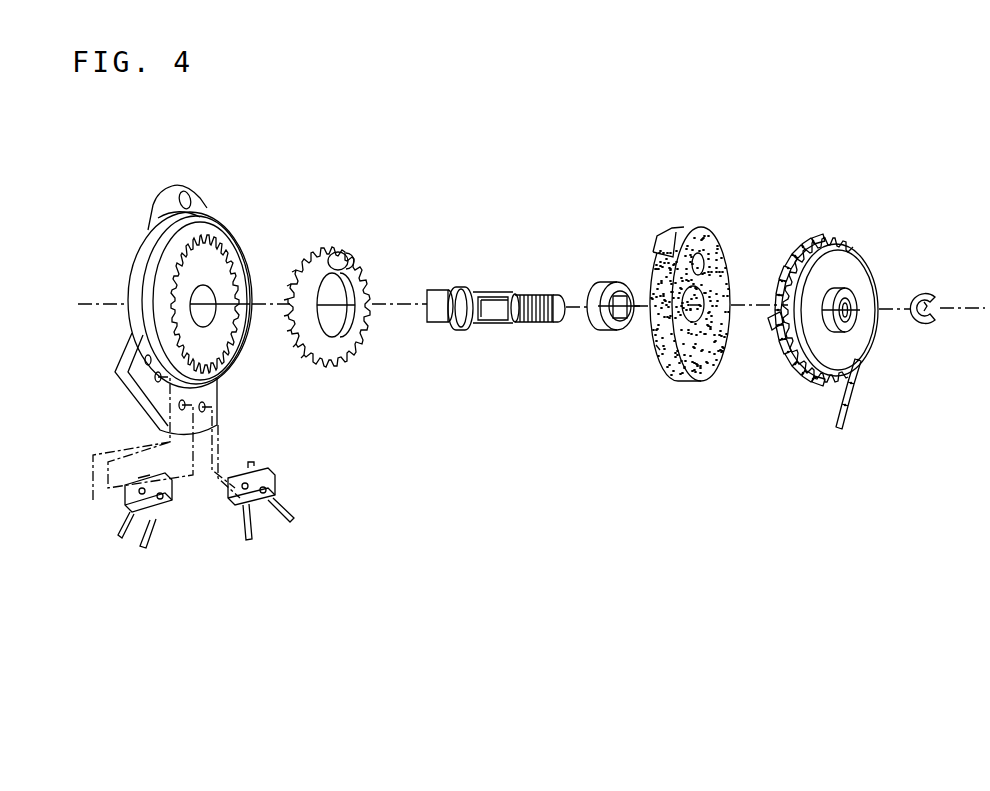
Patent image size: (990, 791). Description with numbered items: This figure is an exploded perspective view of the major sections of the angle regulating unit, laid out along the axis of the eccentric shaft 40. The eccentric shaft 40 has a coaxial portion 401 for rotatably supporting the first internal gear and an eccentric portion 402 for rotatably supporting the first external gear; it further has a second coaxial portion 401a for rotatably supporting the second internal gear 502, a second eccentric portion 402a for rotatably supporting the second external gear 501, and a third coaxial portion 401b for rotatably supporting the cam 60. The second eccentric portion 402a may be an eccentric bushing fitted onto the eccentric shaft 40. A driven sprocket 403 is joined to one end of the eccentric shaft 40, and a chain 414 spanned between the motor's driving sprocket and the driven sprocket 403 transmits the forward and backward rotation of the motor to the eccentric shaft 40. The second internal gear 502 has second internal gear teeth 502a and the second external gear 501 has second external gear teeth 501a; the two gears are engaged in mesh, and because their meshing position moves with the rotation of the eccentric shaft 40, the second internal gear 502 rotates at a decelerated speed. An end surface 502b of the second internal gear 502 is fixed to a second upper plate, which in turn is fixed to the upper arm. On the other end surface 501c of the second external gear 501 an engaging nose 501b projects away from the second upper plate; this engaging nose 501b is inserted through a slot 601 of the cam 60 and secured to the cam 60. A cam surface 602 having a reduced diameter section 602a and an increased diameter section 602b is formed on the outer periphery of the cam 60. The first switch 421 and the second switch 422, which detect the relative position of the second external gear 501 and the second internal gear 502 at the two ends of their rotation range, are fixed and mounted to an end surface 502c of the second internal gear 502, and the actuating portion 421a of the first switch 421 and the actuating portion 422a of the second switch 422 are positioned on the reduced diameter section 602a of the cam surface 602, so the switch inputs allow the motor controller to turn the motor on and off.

The eccentric shaft 40 is at (503, 296).
The coaxial portion 401 is at (438, 318).
The second coaxial portion 401a is at (480, 325).
The third coaxial portion 401b is at (522, 304).
The eccentric portion 402 is at (458, 328).
The second eccentric portion 402a is at (598, 287).
The driven sprocket 403 is at (838, 267).
The chain 414 is at (848, 425).
The first switch 421 is at (277, 473).
The actuating portion 421a is at (256, 462).
The second switch 422 is at (178, 482).
The actuating portion 422a is at (172, 473).
The second external gear 501 is at (362, 268).
The second external gear teeth 501a is at (297, 262).
The engaging nose 501b is at (348, 258).
The end surface 501c is at (348, 350).
The second internal gear 502 is at (212, 260).
The second internal gear teeth 502a is at (247, 340).
The end surface 502b is at (145, 200).
The end surface 502c is at (142, 383).
The cam 60 is at (695, 305).
The slot 601 is at (707, 258).
The cam surface 602 is at (680, 384).
The reduced diameter section 602a is at (660, 360).
The increased diameter section 602b is at (662, 243).